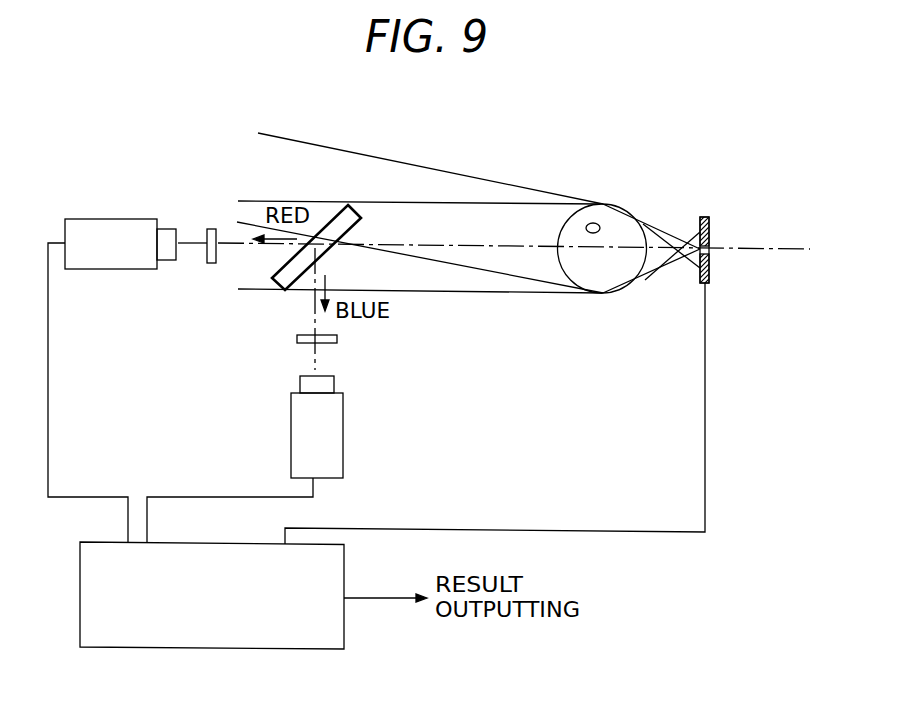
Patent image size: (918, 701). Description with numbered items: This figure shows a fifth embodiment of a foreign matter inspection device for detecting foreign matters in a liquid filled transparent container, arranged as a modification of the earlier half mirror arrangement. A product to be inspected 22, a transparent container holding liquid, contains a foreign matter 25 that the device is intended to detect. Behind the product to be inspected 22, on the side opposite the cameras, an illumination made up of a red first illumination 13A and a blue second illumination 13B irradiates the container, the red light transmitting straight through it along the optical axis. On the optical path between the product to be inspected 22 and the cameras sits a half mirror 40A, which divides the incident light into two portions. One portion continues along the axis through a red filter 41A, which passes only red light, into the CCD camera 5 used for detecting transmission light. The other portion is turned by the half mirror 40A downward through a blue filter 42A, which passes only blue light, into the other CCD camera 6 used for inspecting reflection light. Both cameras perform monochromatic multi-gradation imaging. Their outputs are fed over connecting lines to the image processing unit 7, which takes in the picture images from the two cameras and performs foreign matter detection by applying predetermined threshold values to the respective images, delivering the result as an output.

The CCD camera 5 is at (113, 220).
The red filter 41A is at (212, 228).
The half mirror 40A is at (273, 289).
The blue filter 42A is at (337, 339).
The CCD camera 6 is at (290, 403).
The image processing unit 7 is at (219, 640).
The product to be inspected 22 is at (620, 296).
The foreign matter 25 is at (596, 223).
The first illumination 13A is at (711, 243).
The second illumination 13B is at (711, 285).